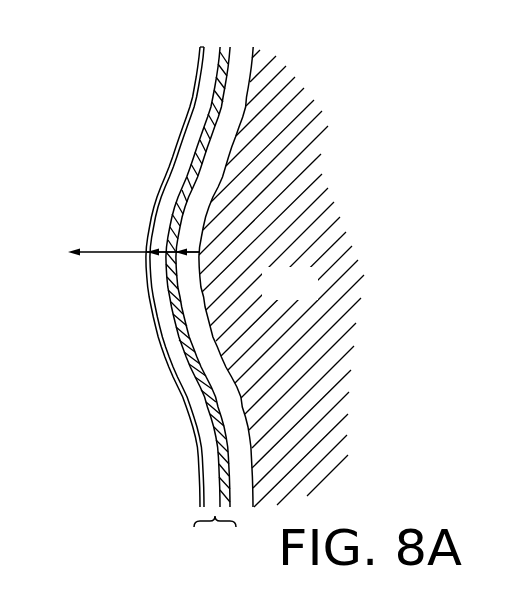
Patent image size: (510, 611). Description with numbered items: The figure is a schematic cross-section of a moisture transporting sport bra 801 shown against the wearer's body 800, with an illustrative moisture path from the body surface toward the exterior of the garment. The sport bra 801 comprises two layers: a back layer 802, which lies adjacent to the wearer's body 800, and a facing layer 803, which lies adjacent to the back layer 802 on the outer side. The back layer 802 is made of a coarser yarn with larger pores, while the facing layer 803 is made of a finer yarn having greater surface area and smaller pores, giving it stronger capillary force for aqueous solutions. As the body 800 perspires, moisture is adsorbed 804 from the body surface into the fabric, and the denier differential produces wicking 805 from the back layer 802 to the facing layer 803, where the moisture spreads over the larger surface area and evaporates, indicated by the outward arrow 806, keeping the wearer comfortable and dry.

The wearer's body 800 is at (312, 296).
The moisture transporting sport bra 801 is at (214, 537).
The back layer 802 is at (238, 39).
The facing layer 803 is at (200, 69).
The adsorption of moisture 804 is at (183, 252).
The wicking 805 is at (160, 256).
The coating system thickness direction 806 is at (93, 252).